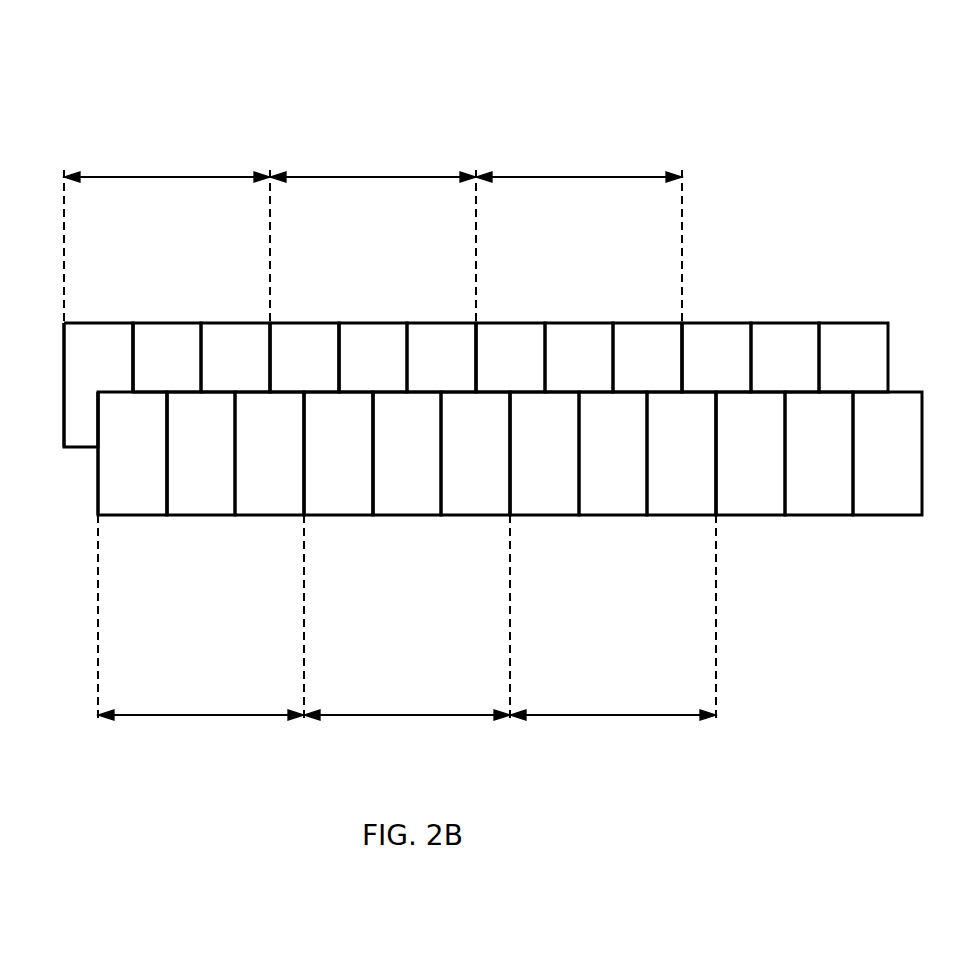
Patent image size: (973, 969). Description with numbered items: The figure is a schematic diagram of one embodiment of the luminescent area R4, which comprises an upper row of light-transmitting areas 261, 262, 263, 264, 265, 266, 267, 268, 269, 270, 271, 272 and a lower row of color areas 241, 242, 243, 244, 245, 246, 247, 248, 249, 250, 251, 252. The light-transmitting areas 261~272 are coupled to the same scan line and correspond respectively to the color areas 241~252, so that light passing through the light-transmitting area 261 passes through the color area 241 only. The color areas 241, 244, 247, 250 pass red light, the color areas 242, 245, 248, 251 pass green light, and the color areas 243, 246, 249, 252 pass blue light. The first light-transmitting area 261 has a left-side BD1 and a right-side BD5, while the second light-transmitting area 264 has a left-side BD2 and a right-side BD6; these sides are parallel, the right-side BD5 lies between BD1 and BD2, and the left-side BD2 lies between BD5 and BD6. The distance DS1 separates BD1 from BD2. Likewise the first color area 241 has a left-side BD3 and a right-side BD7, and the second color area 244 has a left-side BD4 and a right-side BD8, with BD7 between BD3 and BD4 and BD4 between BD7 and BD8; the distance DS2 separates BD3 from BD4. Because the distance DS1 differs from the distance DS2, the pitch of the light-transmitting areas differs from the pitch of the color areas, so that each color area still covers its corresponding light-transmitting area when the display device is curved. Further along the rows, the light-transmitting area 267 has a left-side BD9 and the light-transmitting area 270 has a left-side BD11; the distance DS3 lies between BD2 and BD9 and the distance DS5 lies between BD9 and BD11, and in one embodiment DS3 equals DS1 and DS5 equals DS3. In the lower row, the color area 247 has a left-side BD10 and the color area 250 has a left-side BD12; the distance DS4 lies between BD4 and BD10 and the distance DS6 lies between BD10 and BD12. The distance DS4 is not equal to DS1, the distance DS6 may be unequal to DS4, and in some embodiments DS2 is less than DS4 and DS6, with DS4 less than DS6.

The luminescent area R4 is at (871, 132).
The color area 241 is at (132, 453).
The color area 242 is at (201, 453).
The color area 243 is at (269, 453).
The color area 244 is at (338, 453).
The color area 245 is at (407, 453).
The color area 246 is at (475, 453).
The color area 247 is at (544, 453).
The color area 248 is at (613, 453).
The color area 249 is at (681, 453).
The color area 250 is at (750, 453).
The color area 251 is at (819, 453).
The color area 252 is at (887, 453).
The light-transmitting area 261 is at (98, 385).
The light-transmitting area 262 is at (167, 357).
The light-transmitting area 263 is at (235, 357).
The light-transmitting area 264 is at (304, 357).
The light-transmitting area 265 is at (373, 357).
The light-transmitting area 266 is at (441, 357).
The light-transmitting area 267 is at (510, 357).
The light-transmitting area 268 is at (579, 357).
The light-transmitting area 269 is at (647, 357).
The light-transmitting area 270 is at (716, 357).
The light-transmitting area 271 is at (785, 357).
The light-transmitting area 272 is at (853, 357).
The left-side BD1 is at (66, 335).
The left-side BD2 is at (272, 335).
The left-side BD3 is at (100, 505).
The left-side BD4 is at (306, 505).
The right-side BD5 is at (131, 335).
The right-side BD6 is at (337, 335).
The right-side BD7 is at (165, 505).
The right-side BD8 is at (371, 505).
The left-side BD9 is at (478, 335).
The left-side BD10 is at (512, 505).
The left-side BD11 is at (684, 335).
The left-side BD12 is at (718, 505).
The distance DS1 is at (167, 229).
The distance DS2 is at (201, 618).
The distance DS3 is at (373, 229).
The distance DS4 is at (407, 618).
The distance DS5 is at (579, 229).
The distance DS6 is at (613, 618).